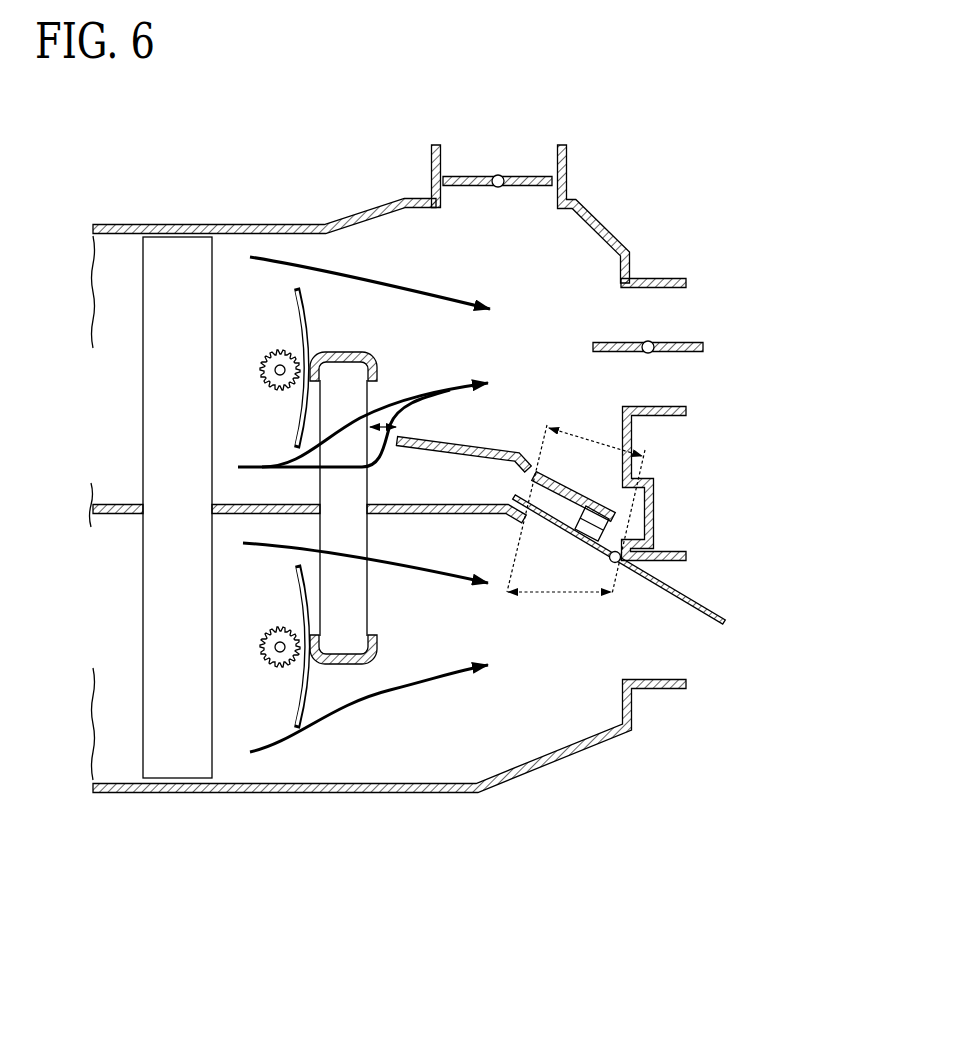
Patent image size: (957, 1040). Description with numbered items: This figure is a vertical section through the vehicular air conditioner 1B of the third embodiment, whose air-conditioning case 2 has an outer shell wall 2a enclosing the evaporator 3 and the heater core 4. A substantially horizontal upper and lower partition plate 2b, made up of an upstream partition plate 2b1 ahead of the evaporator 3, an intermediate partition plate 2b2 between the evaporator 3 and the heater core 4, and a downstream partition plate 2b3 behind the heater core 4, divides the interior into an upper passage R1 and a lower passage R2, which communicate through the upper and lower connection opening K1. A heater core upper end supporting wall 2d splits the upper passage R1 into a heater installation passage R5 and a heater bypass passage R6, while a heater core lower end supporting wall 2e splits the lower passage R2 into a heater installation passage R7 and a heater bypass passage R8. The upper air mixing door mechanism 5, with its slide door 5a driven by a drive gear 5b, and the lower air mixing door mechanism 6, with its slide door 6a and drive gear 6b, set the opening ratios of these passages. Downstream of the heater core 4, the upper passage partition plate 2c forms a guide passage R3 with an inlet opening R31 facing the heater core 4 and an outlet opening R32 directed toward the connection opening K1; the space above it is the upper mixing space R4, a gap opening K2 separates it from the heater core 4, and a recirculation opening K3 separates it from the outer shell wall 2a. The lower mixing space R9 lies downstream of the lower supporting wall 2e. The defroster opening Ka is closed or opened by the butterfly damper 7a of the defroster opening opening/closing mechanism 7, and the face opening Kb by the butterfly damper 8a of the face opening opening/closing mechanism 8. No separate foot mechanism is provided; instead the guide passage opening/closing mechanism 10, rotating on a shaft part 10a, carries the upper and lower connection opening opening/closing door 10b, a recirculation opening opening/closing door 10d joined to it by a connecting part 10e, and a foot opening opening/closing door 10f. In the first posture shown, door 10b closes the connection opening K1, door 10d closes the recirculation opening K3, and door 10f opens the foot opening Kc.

The vehicular air conditioner 1B is at (716, 147).
The air-conditioning case 2 is at (264, 171).
The outer shell wall 2a is at (258, 224).
The upper and lower partition plate 2b is at (297, 498).
The upstream partition plate 2b1 is at (117, 503).
The intermediate partition plate 2b2 is at (218, 520).
The downstream partition plate 2b3 is at (433, 516).
The upper passage partition plate 2c is at (498, 450).
The heater core upper end supporting wall 2d is at (350, 352).
The heater core lower end supporting wall 2e is at (380, 655).
The evaporator 3 is at (168, 250).
The heater core 4 is at (379, 483).
The upper air mixing door mechanism 5 is at (261, 358).
The slide door 5a is at (294, 298).
The drive gear 5b is at (268, 360).
The lower air mixing door mechanism 6 is at (263, 638).
The slide door 6a is at (294, 590).
The drive gear 6b is at (272, 655).
The defroster opening opening/closing mechanism 7 is at (497, 149).
The butterfly damper 7a is at (472, 186).
The face opening opening/closing mechanism 8 is at (674, 337).
The butterfly damper 8a is at (626, 341).
The guide passage opening/closing mechanism 10 is at (656, 518).
The shaft part 10a is at (618, 566).
The upper and lower connection opening opening/closing door 10b is at (570, 530).
The recirculation opening opening/closing door 10d is at (571, 472).
The connecting part 10e is at (607, 528).
The foot opening opening/closing door 10f is at (702, 603).
The upper and lower connection opening K1 is at (553, 595).
The gap opening K2 is at (385, 422).
The recirculation opening K3 is at (575, 432).
The defroster opening Ka is at (441, 165).
The face opening Kb is at (672, 288).
The foot opening Kc is at (682, 560).
The upper passage R1 is at (129, 312).
The lower passage R2 is at (129, 725).
The guide passage R3 is at (450, 468).
The inlet opening R31 is at (392, 492).
The outlet opening R32 is at (514, 494).
The upper mixing space R4 is at (560, 256).
The heater installation passage R5 is at (352, 400).
The heater bypass passage R6 is at (357, 252).
The heater installation passage R7 is at (348, 594).
The heater bypass passage R8 is at (369, 755).
The lower mixing space R9 is at (565, 717).